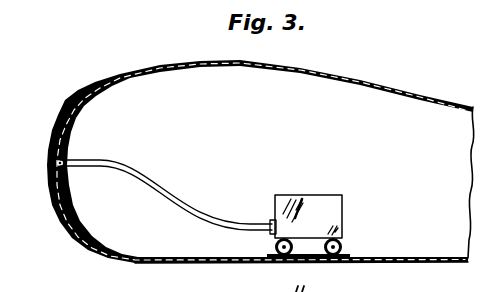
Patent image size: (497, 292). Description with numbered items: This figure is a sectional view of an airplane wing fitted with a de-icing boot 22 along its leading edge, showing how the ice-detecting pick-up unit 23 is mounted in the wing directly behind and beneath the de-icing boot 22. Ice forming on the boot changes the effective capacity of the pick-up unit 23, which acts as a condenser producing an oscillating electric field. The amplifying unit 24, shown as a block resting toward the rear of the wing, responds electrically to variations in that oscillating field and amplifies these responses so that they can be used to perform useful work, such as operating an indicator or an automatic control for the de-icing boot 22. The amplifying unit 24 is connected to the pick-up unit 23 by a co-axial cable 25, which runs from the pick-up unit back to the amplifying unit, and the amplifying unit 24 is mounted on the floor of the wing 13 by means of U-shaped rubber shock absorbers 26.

The floor of the wing 13 is at (133, 264).
The de-icing boot 22 is at (52, 125).
The pick-up unit 23 is at (68, 147).
The amplifying unit 24 is at (318, 210).
The co-axial cable 25 is at (167, 194).
The U-shaped rubber shock absorbers 26 is at (276, 247).